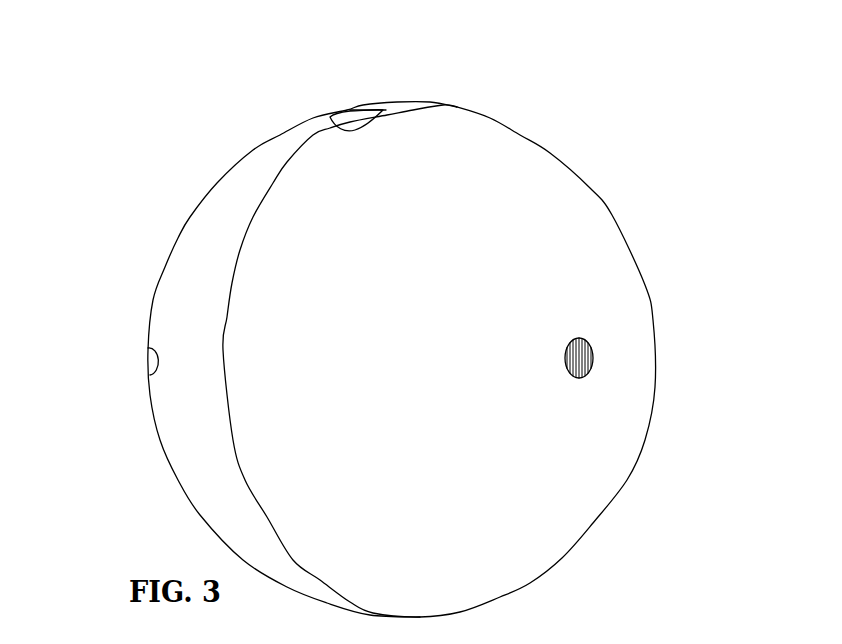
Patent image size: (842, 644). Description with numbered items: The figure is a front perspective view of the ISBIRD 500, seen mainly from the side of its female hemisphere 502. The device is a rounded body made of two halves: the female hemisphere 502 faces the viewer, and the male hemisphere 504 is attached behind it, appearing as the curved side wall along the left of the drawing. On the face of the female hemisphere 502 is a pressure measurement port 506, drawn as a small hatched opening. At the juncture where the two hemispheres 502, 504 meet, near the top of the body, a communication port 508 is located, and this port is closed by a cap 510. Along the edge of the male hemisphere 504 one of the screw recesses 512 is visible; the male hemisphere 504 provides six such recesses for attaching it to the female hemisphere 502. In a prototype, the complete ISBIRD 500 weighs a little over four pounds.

The ISBIRD 500 is at (398, 316).
The female hemisphere 502 is at (646, 285).
The male hemisphere 504 is at (178, 238).
The pressure measurement port 506 is at (594, 364).
The communication port 508 is at (343, 129).
The cap 510 is at (398, 99).
The screw recess 512 is at (147, 362).